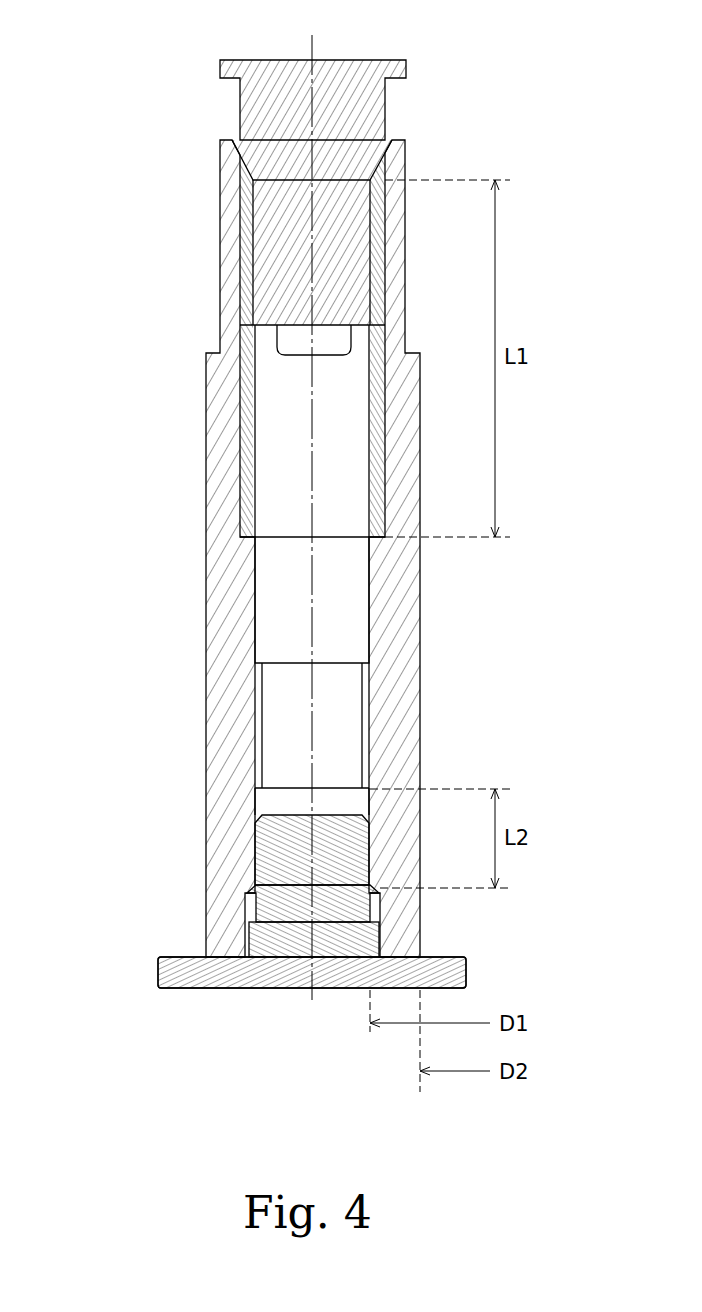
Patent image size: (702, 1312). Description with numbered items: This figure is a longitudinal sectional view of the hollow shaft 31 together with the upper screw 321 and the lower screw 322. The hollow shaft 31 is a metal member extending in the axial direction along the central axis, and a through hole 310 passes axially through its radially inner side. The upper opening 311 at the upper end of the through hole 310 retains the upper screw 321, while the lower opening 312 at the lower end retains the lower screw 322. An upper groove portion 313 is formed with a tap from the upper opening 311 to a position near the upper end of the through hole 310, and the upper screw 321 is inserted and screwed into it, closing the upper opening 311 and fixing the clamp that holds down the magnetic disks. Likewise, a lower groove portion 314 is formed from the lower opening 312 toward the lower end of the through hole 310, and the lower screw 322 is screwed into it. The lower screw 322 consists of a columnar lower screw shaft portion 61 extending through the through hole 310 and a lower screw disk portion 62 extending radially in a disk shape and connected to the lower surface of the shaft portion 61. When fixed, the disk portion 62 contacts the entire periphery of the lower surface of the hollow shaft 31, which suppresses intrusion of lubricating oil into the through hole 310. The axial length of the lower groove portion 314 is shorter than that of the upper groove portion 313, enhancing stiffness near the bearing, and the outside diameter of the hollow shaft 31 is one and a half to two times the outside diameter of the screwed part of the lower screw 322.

The hollow shaft 31 is at (395, 565).
The through hole 310 is at (273, 570).
The upper opening 311 is at (360, 157).
The lower opening 312 is at (330, 933).
The upper groove portion 313 is at (372, 302).
The lower groove portion 314 is at (362, 838).
The upper screw 321 is at (275, 80).
The lower screw 322 is at (278, 1098).
The lower screw shaft portion 61 is at (283, 858).
The lower screw disk portion 62 is at (287, 973).